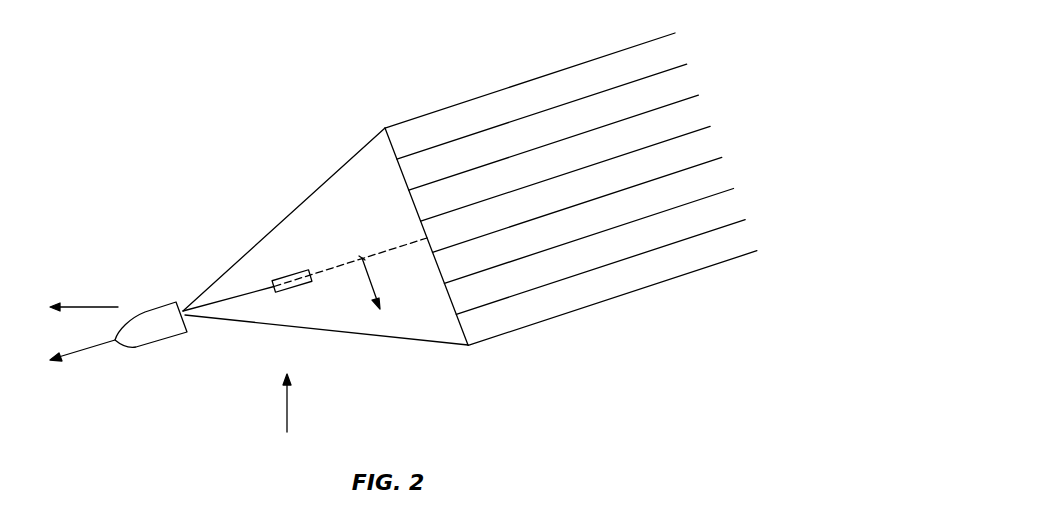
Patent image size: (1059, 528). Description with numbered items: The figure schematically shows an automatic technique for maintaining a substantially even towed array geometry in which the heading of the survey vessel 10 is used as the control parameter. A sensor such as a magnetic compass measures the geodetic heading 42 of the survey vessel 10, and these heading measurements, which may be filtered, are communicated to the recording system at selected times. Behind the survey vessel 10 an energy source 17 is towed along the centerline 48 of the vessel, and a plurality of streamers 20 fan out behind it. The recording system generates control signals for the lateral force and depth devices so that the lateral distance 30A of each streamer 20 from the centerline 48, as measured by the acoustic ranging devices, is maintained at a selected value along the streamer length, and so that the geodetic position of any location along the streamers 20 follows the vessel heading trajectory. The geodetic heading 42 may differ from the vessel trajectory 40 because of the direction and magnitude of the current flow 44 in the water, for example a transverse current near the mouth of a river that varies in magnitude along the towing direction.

The survey vessel 10 is at (145, 310).
The energy source 17 is at (295, 270).
The streamers 20 is at (532, 80).
The lateral distance 30A is at (369, 280).
The vessel trajectory 40 is at (92, 305).
The geodetic heading 42 is at (80, 348).
The current flow 44 is at (285, 410).
The centerline 48 is at (395, 246).